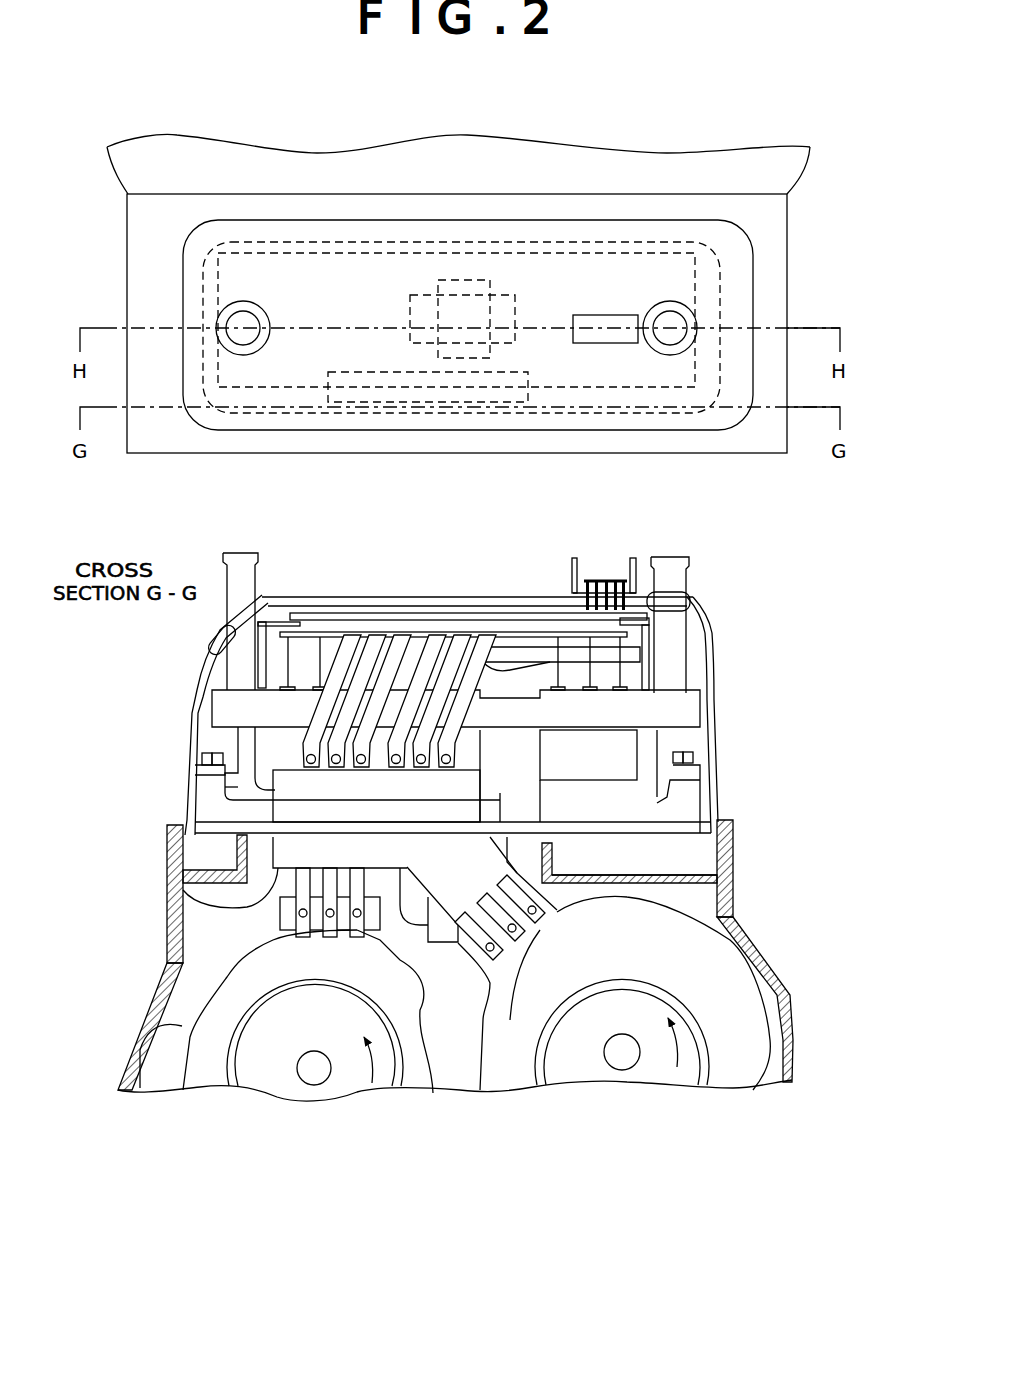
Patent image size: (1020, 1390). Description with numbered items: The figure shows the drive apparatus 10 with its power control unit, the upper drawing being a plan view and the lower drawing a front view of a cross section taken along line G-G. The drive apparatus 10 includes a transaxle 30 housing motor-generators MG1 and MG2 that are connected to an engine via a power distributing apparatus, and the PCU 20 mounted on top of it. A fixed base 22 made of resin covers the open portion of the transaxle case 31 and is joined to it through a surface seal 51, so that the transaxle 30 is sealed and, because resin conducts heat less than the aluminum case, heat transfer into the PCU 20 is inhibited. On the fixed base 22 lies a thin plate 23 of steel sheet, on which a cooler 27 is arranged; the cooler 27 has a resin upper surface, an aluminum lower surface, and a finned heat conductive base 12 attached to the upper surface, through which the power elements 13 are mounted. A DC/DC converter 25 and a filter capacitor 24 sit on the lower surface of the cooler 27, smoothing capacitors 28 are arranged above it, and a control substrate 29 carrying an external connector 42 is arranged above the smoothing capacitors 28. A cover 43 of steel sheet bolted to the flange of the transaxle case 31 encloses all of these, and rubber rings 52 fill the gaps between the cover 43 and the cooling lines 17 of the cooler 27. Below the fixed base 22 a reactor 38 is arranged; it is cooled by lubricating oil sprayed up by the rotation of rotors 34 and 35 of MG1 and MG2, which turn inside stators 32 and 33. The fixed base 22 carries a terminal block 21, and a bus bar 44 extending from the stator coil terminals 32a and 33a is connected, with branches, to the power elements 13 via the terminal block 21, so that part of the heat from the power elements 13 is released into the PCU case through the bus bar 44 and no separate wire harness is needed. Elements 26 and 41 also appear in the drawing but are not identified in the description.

The drive apparatus 10 is at (868, 620).
The heat conductive base 12 is at (522, 648).
The power elements 13 is at (547, 657).
The cooling lines 17 is at (697, 327).
The power control unit 20 is at (735, 695).
The terminal block 21 is at (166, 878).
The fixed base 22 is at (703, 790).
The thin plate 23 is at (657, 818).
The filter capacitor 24 is at (637, 737).
The DC/DC converter 25 is at (228, 797).
The connector 26 is at (212, 752).
The cooler 27 is at (225, 283).
The smoothing capacitors 28 is at (327, 655).
The control substrate 29 is at (217, 263).
The transaxle 30 is at (765, 918).
The transaxle case 31 is at (745, 858).
The stator 32 is at (132, 1042).
The stator coil terminal 32a is at (167, 965).
The stator 33 is at (733, 1040).
The stator coil terminal 33a is at (558, 945).
The rotor 34 is at (277, 1065).
The rotor 35 is at (580, 1053).
The reactor 38 is at (493, 283).
The reactor 41 is at (327, 377).
The external connector 42 is at (623, 320).
The cover 43 is at (747, 237).
The bus bar 44 is at (300, 711).
The surface seal 51 is at (243, 841).
The rubber rings 52 is at (220, 310).
The motor-generator MG1 is at (215, 1048).
The motor-generator MG2 is at (509, 1033).